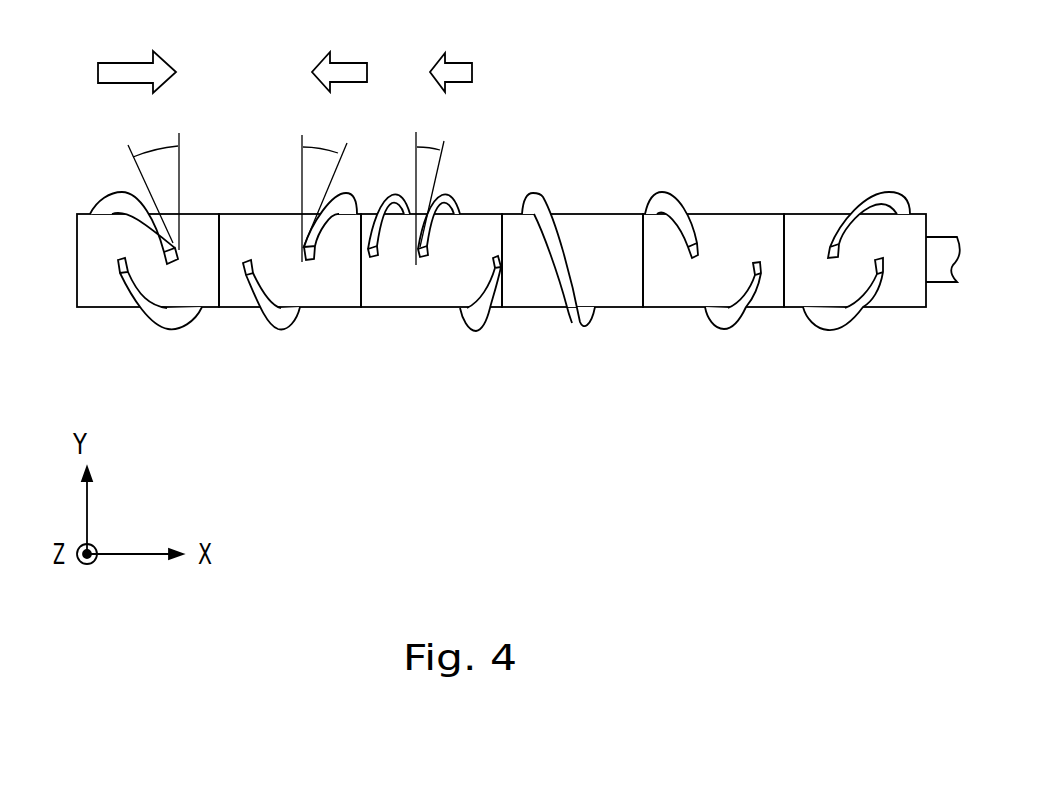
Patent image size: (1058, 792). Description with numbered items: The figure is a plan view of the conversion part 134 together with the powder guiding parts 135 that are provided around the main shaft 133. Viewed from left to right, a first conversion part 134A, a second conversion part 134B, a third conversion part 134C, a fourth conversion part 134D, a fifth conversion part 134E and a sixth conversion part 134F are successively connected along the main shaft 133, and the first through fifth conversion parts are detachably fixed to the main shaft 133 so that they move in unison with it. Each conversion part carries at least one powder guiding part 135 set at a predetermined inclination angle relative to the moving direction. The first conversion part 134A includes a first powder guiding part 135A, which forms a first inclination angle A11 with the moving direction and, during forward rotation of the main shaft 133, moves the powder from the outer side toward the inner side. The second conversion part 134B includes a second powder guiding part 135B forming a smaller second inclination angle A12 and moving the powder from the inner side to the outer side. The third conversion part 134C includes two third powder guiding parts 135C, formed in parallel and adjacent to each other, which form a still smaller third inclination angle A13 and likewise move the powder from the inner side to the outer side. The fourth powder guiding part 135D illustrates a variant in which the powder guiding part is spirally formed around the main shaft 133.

The main shaft 133 is at (943, 237).
The conversion part 134 is at (497, 461).
The first conversion part 134A is at (217, 353).
The second conversion part 134B is at (358, 353).
The third conversion part 134C is at (499, 353).
The fourth conversion part 134D is at (641, 353).
The fifth conversion part 134E is at (782, 353).
The 6th conversion part 134F is at (924, 353).
The powder guiding part 135 is at (244, 117).
The first powder guiding part 135A is at (115, 193).
The second powder guiding part 135B is at (323, 204).
The third powder guiding part 135C is at (380, 200).
The fourth powder guiding part 135D is at (560, 232).
The first inclination angle A11 is at (151, 182).
The second inclination angle A12 is at (324, 184).
The third inclination angle A13 is at (432, 184).